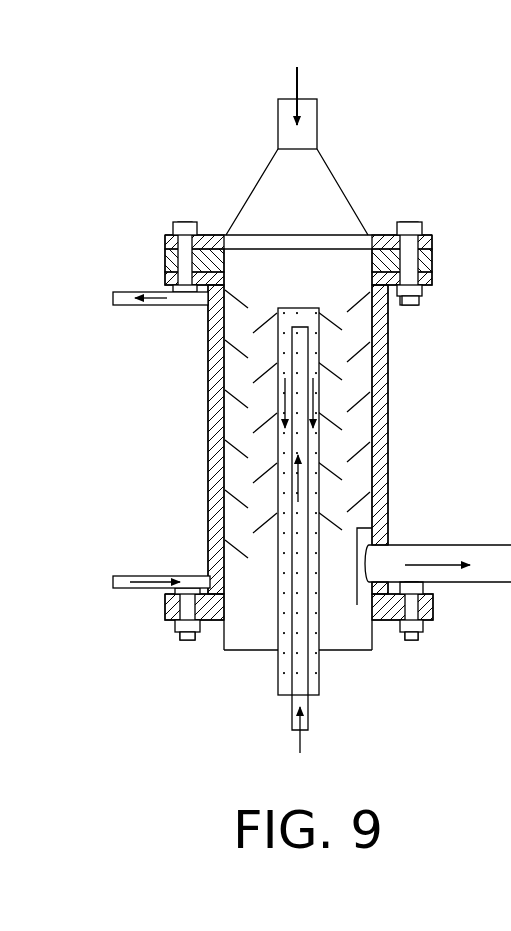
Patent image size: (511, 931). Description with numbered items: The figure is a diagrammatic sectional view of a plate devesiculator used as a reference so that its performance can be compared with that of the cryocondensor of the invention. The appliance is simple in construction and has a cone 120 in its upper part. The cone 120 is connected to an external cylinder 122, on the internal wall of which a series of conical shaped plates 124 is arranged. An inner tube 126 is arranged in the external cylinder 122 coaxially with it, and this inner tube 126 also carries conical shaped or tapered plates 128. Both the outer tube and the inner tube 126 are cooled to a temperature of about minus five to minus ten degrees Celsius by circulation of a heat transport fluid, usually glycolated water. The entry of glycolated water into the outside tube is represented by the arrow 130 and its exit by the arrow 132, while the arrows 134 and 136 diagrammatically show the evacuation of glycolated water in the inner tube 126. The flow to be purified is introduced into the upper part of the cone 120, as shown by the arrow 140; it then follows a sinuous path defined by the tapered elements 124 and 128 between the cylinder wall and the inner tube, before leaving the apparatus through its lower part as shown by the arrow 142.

The cone 120 is at (342, 186).
The external cylinder 122 is at (210, 392).
The conical shaped plates 124 is at (250, 310).
The inner tube 126 is at (327, 619).
The conical shaped or tapered plates 128 is at (335, 325).
The arrow 130 is at (153, 580).
The arrow 132 is at (165, 300).
The arrow 134 is at (300, 752).
The arrow 136 is at (318, 388).
The arrow 140 is at (298, 78).
The arrow 142 is at (445, 563).